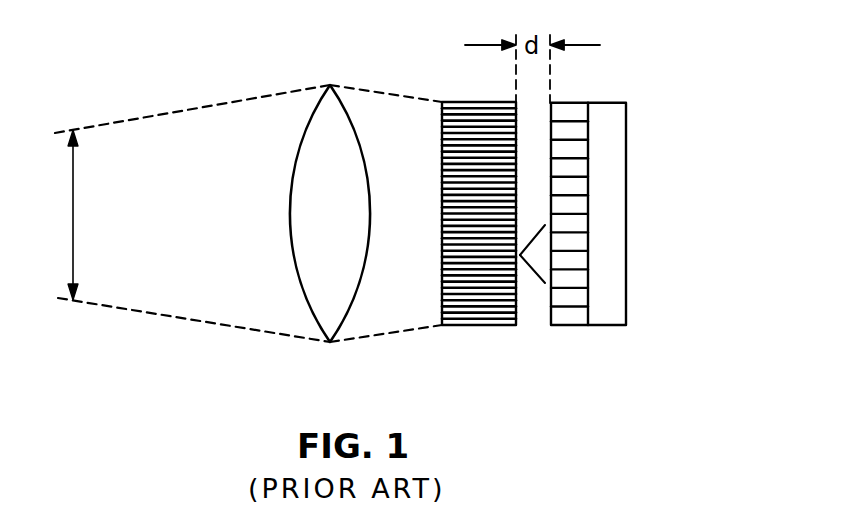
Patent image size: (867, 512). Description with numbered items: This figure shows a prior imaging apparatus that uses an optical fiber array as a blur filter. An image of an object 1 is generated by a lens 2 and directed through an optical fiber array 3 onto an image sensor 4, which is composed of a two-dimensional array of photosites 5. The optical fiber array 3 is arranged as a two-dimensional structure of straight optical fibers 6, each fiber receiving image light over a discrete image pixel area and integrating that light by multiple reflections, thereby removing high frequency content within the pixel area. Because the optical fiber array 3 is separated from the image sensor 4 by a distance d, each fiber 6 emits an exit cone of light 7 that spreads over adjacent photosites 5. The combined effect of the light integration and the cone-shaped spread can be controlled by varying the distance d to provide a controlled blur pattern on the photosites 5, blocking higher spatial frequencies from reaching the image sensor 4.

The object 1 is at (73, 205).
The lens 2 is at (313, 312).
The optical fiber array 3 is at (452, 328).
The image sensor 4 is at (626, 122).
The photosites 5 is at (580, 203).
The optical fibers 6 is at (444, 243).
The exit cone of light 7 is at (532, 277).